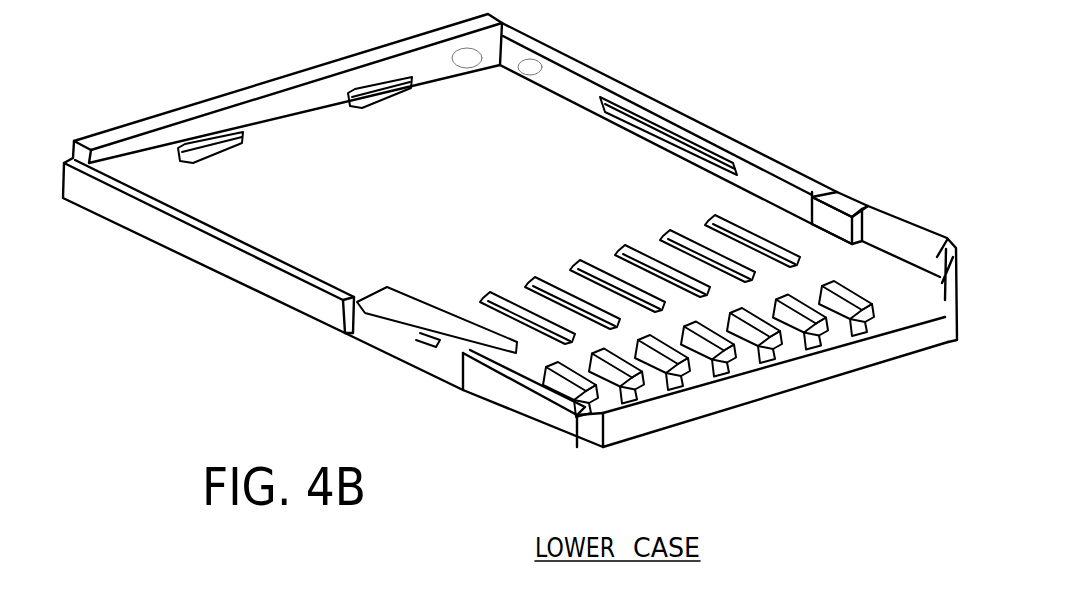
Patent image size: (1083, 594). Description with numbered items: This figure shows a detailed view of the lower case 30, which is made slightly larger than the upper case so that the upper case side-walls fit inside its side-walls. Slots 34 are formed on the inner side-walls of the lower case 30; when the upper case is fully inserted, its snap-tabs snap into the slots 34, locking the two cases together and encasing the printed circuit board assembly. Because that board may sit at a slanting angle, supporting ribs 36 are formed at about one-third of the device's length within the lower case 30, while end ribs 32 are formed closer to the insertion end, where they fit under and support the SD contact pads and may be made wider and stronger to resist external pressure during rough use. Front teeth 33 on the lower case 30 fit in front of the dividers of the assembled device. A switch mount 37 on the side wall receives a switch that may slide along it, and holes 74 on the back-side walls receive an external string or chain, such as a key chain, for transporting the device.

The lower case 30 is at (510, 230).
The end ribs 32 is at (733, 352).
The front teeth 33 is at (903, 352).
The slots 34 is at (227, 147).
The supporting ribs 36 is at (542, 276).
The switch mount 37 is at (413, 353).
The holes 74 is at (525, 68).